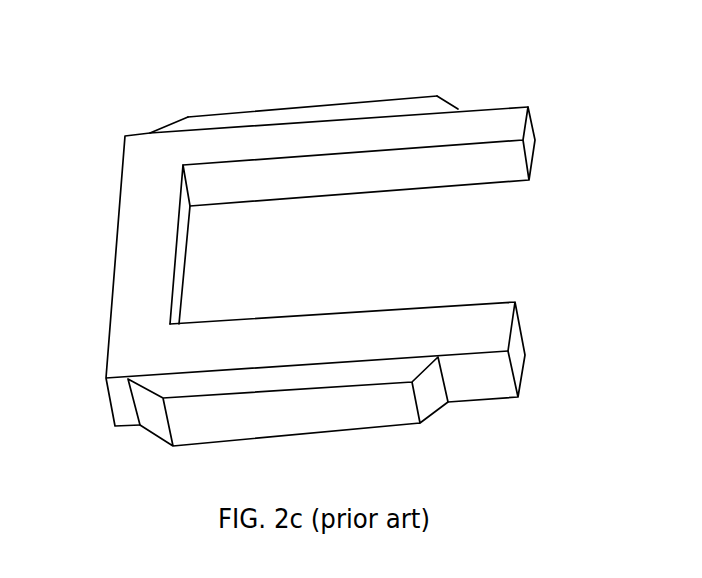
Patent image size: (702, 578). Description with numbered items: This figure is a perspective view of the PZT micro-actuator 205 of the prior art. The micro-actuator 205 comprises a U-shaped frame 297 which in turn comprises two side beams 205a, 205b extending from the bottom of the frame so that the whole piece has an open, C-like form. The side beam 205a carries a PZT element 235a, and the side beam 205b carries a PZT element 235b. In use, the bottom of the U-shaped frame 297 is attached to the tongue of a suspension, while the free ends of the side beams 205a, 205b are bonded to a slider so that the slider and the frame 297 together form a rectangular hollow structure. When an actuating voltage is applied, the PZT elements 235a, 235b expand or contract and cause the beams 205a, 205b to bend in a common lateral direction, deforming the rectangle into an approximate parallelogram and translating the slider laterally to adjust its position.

The PZT micro-actuator 205 is at (150, 72).
The side beam 205a is at (435, 163).
The side beam 205b is at (412, 325).
The PZT element 235a is at (408, 108).
The PZT element 235b is at (383, 393).
The U-shaped frame 297 is at (147, 265).